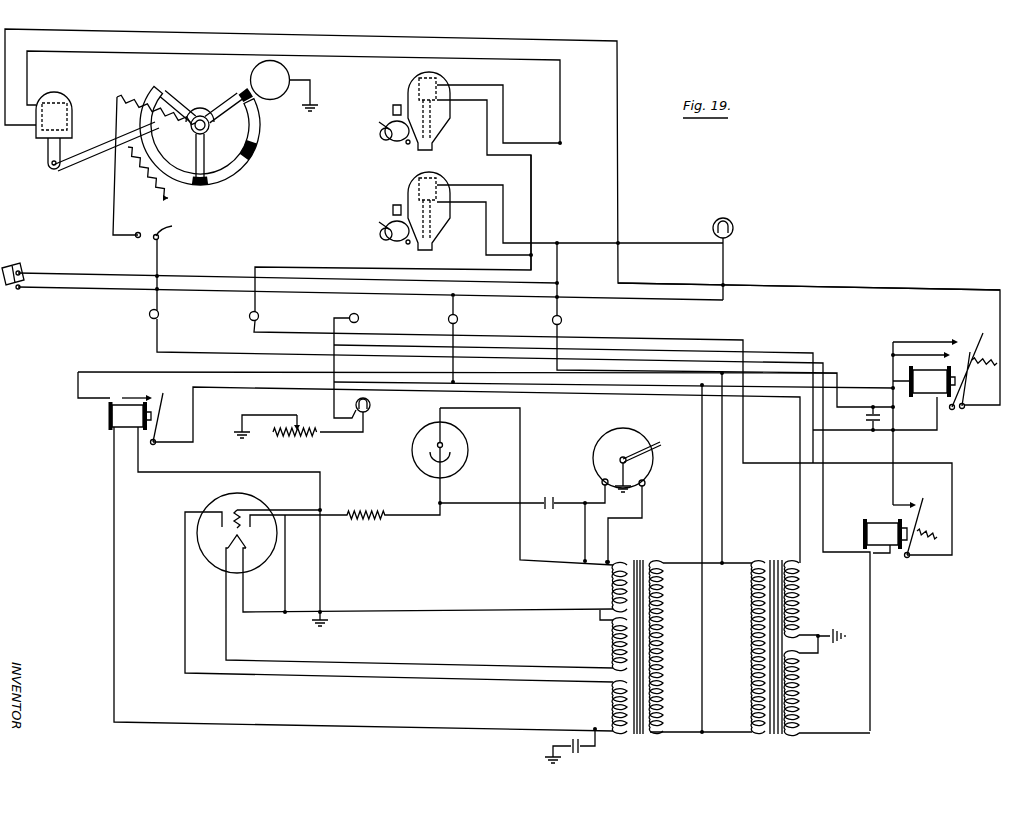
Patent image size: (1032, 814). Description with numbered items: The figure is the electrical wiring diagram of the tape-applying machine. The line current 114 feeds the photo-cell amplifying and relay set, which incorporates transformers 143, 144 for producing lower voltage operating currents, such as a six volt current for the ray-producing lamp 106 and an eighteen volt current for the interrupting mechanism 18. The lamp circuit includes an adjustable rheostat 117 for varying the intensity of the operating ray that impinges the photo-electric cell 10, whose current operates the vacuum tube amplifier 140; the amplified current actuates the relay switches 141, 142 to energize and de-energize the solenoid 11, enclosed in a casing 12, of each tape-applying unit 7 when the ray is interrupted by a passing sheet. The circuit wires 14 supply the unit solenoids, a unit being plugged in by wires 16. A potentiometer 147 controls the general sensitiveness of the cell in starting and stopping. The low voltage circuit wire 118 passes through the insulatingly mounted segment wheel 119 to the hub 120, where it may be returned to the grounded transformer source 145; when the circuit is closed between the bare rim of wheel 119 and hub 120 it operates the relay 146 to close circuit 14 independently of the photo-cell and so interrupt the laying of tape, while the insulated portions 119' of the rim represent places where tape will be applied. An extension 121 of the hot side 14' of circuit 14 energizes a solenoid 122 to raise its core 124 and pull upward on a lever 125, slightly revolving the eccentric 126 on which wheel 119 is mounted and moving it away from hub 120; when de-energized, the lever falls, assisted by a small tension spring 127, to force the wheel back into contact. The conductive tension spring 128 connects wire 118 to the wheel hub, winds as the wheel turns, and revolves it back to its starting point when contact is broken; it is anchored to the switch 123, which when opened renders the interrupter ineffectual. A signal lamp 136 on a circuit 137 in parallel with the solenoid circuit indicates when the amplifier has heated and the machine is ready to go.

The tape-applying unit 7 is at (388, 146).
The photo-electric cell 10 is at (416, 462).
The solenoid 11 is at (415, 157).
The casing 12 is at (414, 78).
The electric circuit wires 14 is at (520, 212).
The hot side of circuit 14 14' is at (725, 303).
The wires 16 is at (474, 97).
The solenoid current interrupting device 18 is at (219, 132).
The lamp 106 is at (371, 405).
The line current 114 is at (64, 283).
The rheostat 117 is at (291, 434).
The low voltage circuit wire 118 is at (157, 258).
The segment wheel 119 is at (202, 139).
The insulated portions 119' is at (245, 134).
The hub 120 is at (276, 99).
The extension 121 is at (327, 32).
The solenoid 122 is at (78, 101).
The switch 123 is at (168, 230).
The core 124 is at (47, 158).
The lever 125 is at (92, 160).
The eccentric 126 is at (208, 114).
The tension spring 127 is at (143, 178).
The tension spring 128 is at (132, 87).
The signal lamp 136 is at (733, 227).
The circuit 137 is at (636, 256).
The vacuum tube amplifier 140 is at (220, 498).
The relay switch 141 is at (439, 551).
The relay switch 142 is at (905, 415).
The transformer 143 is at (651, 762).
The transformer 144 is at (810, 661).
The grounded transformer source 145 is at (796, 708).
The relay 146 is at (901, 528).
The potentiometer 147 is at (641, 440).